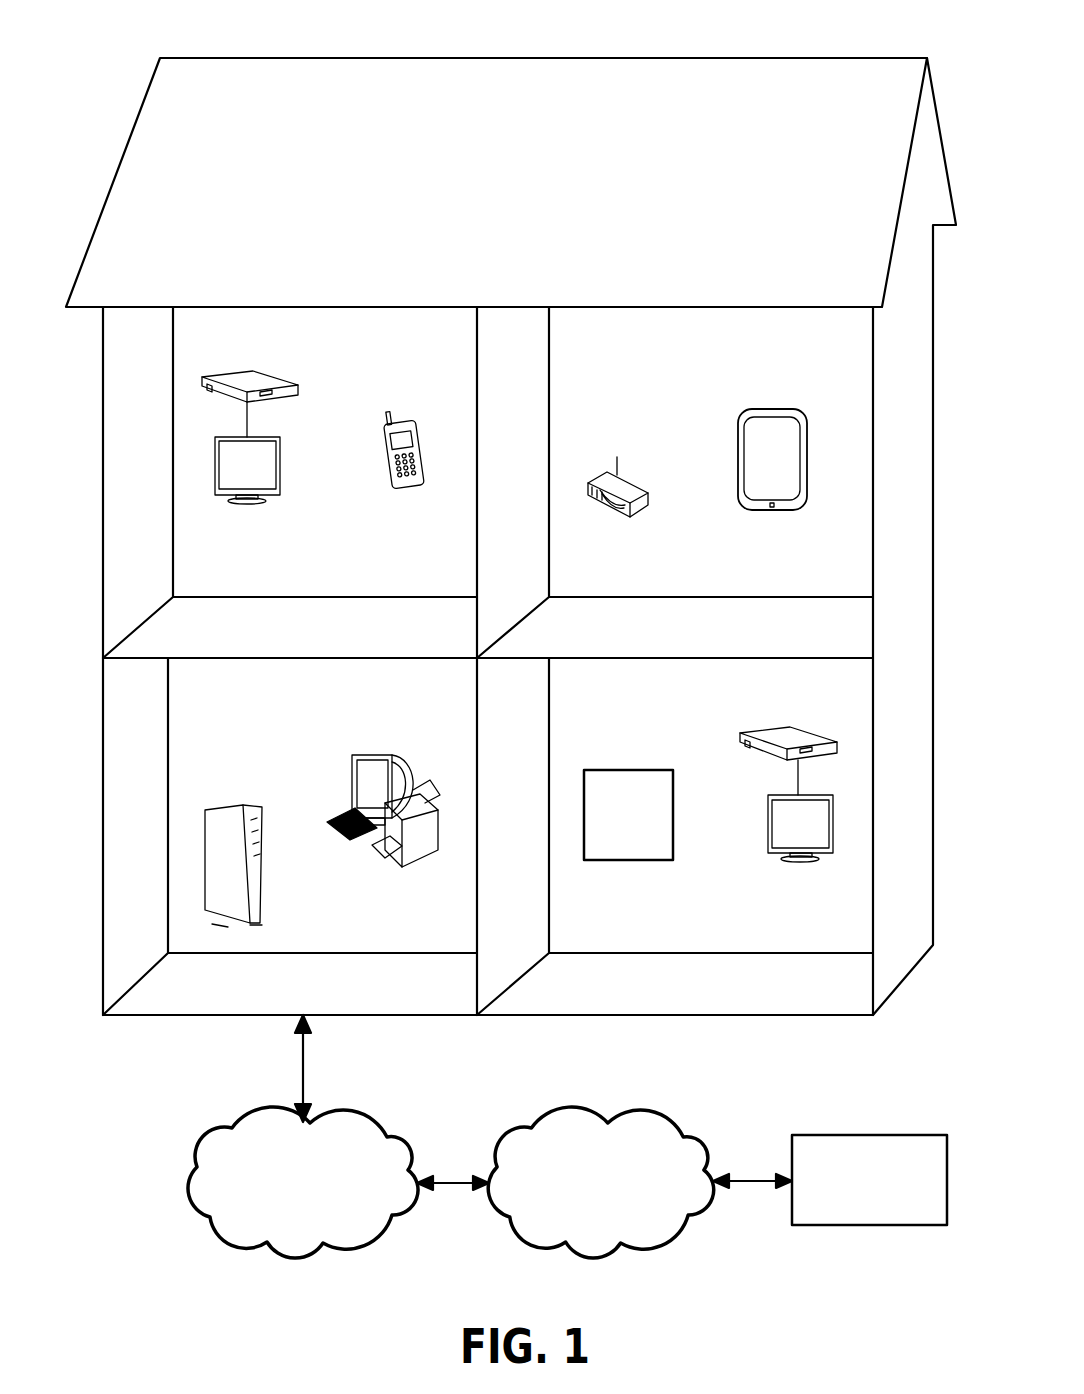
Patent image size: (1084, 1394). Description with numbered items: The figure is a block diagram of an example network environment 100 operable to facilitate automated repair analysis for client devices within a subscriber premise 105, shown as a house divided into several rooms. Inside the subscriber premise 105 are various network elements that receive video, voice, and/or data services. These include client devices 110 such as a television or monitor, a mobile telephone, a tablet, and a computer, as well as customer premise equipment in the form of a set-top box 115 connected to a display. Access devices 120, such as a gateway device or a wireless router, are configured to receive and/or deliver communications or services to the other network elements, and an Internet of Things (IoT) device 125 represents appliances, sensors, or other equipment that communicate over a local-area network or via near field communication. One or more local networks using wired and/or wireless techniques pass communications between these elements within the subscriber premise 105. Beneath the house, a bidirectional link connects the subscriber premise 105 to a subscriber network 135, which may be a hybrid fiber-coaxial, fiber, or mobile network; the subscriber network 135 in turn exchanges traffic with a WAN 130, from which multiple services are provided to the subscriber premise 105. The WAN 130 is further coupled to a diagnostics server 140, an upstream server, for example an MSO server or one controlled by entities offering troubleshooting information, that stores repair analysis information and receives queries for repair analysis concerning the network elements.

The network environment 100 is at (104, 1257).
The subscriber premise 105 is at (230, 57).
The client devices 110 is at (267, 504).
The set-top box 115 is at (275, 373).
The access devices 120 is at (629, 518).
The Internet of Things (IoT) devices 125 is at (657, 862).
The WAN 130 is at (607, 1259).
The subscriber network 135 is at (308, 1259).
The diagnostics server 140 is at (845, 1227).